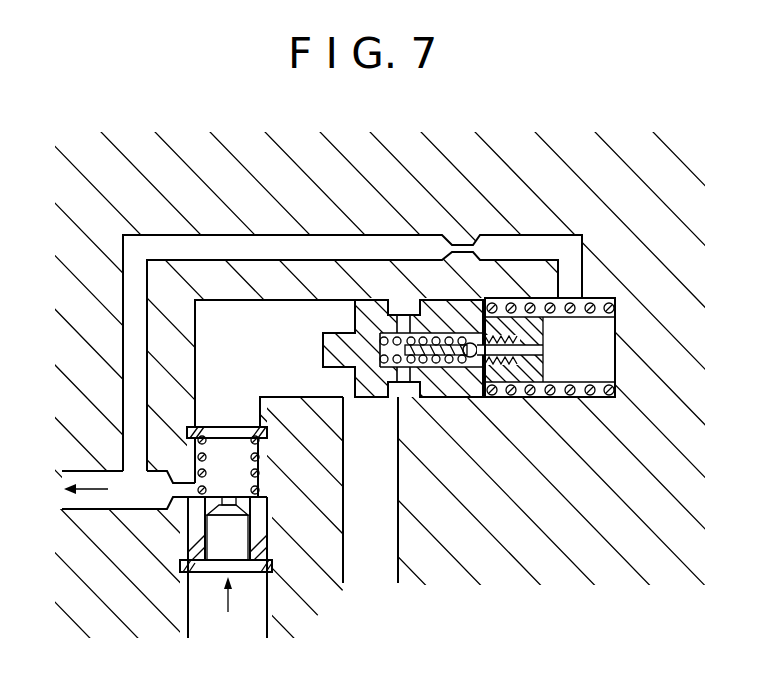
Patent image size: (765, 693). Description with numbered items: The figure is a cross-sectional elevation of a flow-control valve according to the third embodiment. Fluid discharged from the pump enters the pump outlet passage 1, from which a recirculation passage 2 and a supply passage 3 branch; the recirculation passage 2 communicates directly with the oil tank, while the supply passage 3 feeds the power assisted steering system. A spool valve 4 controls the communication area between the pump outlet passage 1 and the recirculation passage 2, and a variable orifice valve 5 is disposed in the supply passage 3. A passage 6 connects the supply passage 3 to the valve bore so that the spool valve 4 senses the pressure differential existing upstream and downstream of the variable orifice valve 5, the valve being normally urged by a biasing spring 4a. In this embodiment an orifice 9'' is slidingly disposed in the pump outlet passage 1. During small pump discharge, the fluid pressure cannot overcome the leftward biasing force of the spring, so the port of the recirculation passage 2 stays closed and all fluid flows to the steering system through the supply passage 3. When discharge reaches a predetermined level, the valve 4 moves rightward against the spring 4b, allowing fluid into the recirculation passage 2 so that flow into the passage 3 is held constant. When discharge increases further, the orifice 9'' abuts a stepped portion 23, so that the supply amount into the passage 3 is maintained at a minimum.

The pump outlet passage 1 is at (253, 598).
The recirculation passage 2 is at (377, 511).
The supply passage 3 is at (130, 494).
The spool valve 4 is at (463, 384).
The biasing spring 4a is at (377, 399).
The spring 4b is at (568, 388).
The variable orifice valve 5 is at (257, 535).
The passage 6 is at (393, 248).
The orifice 9'' is at (227, 462).
The stepped portion 23 is at (268, 470).